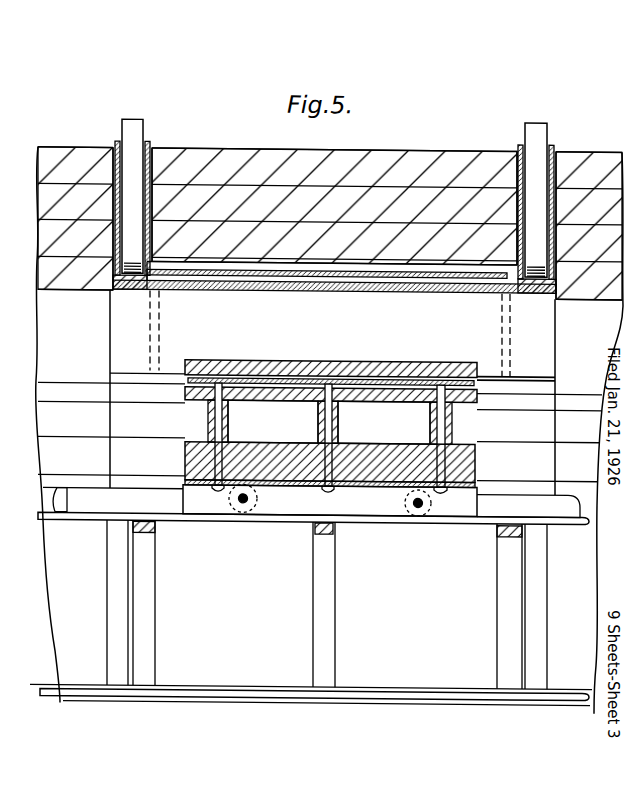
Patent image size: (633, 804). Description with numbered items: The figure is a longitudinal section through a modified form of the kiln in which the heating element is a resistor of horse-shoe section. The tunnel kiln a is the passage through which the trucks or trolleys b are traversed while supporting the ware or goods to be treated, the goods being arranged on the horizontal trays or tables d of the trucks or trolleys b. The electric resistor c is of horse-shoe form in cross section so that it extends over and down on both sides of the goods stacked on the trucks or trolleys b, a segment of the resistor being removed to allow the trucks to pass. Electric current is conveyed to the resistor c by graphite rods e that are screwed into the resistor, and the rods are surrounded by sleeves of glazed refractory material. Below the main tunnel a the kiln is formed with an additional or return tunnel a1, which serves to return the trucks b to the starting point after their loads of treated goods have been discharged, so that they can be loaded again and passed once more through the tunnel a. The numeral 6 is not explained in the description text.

The tunnel kiln a is at (540, 328).
The return tunnel a1 is at (311, 608).
The trucks or trolleys b is at (473, 460).
The electric resistor c is at (478, 292).
The horizontal trays or tables d is at (467, 367).
The graphite rods e is at (132, 127).
The block 6 is at (220, 170).